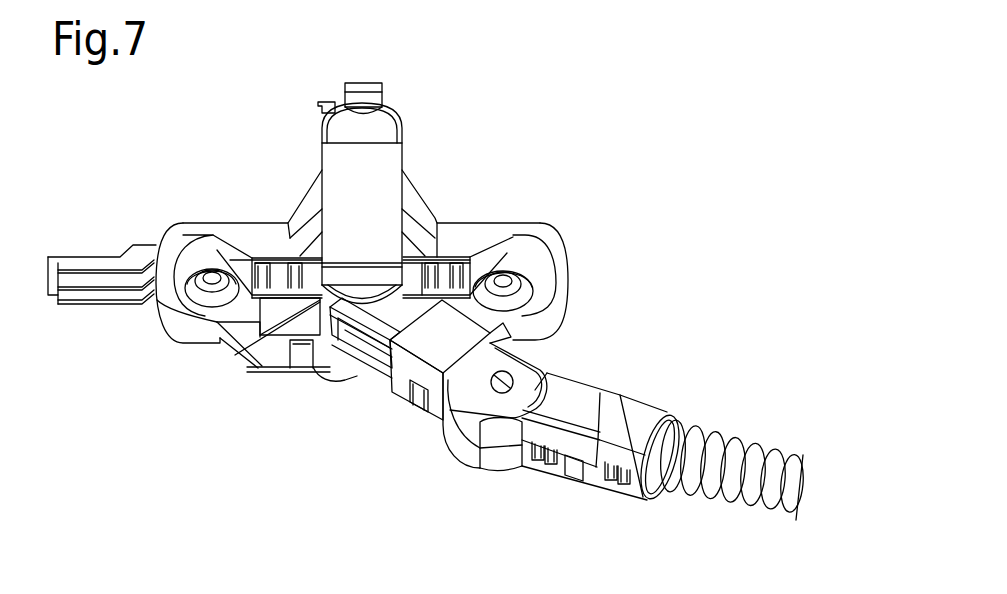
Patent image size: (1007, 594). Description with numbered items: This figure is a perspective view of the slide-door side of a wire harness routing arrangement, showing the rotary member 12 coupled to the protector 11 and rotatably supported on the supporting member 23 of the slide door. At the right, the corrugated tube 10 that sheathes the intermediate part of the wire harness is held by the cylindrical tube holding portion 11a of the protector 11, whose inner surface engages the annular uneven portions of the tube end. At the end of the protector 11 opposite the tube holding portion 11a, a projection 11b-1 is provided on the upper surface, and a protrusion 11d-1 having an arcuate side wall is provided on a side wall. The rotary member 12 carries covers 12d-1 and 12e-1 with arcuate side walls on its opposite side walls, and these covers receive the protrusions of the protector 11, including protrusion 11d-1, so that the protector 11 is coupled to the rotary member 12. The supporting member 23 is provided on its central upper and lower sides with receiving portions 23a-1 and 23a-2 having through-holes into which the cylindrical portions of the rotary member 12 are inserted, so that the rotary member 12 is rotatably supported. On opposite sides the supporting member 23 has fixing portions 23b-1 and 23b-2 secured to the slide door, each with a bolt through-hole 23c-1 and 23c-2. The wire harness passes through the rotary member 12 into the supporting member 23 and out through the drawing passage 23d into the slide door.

The corrugated tube 10 is at (721, 503).
The protector 11 is at (654, 368).
The tube holding portion 11a is at (650, 411).
The projection 11b-1 is at (501, 393).
The protrusion 11d-1 is at (528, 469).
The rotary member 12 is at (382, 410).
The cover 12d-1 is at (447, 412).
The cover 12e-1 is at (514, 346).
The supporting member 23 is at (468, 212).
The receiving portion 23a-1 is at (242, 338).
The receiving portion 23a-2 is at (350, 380).
The fixing portion 23b-1 is at (187, 247).
The fixing portion 23b-2 is at (536, 243).
The bolt through-hole 23c-1 is at (185, 306).
The bolt through-hole 23c-2 is at (520, 272).
The drawing passage 23d is at (399, 163).